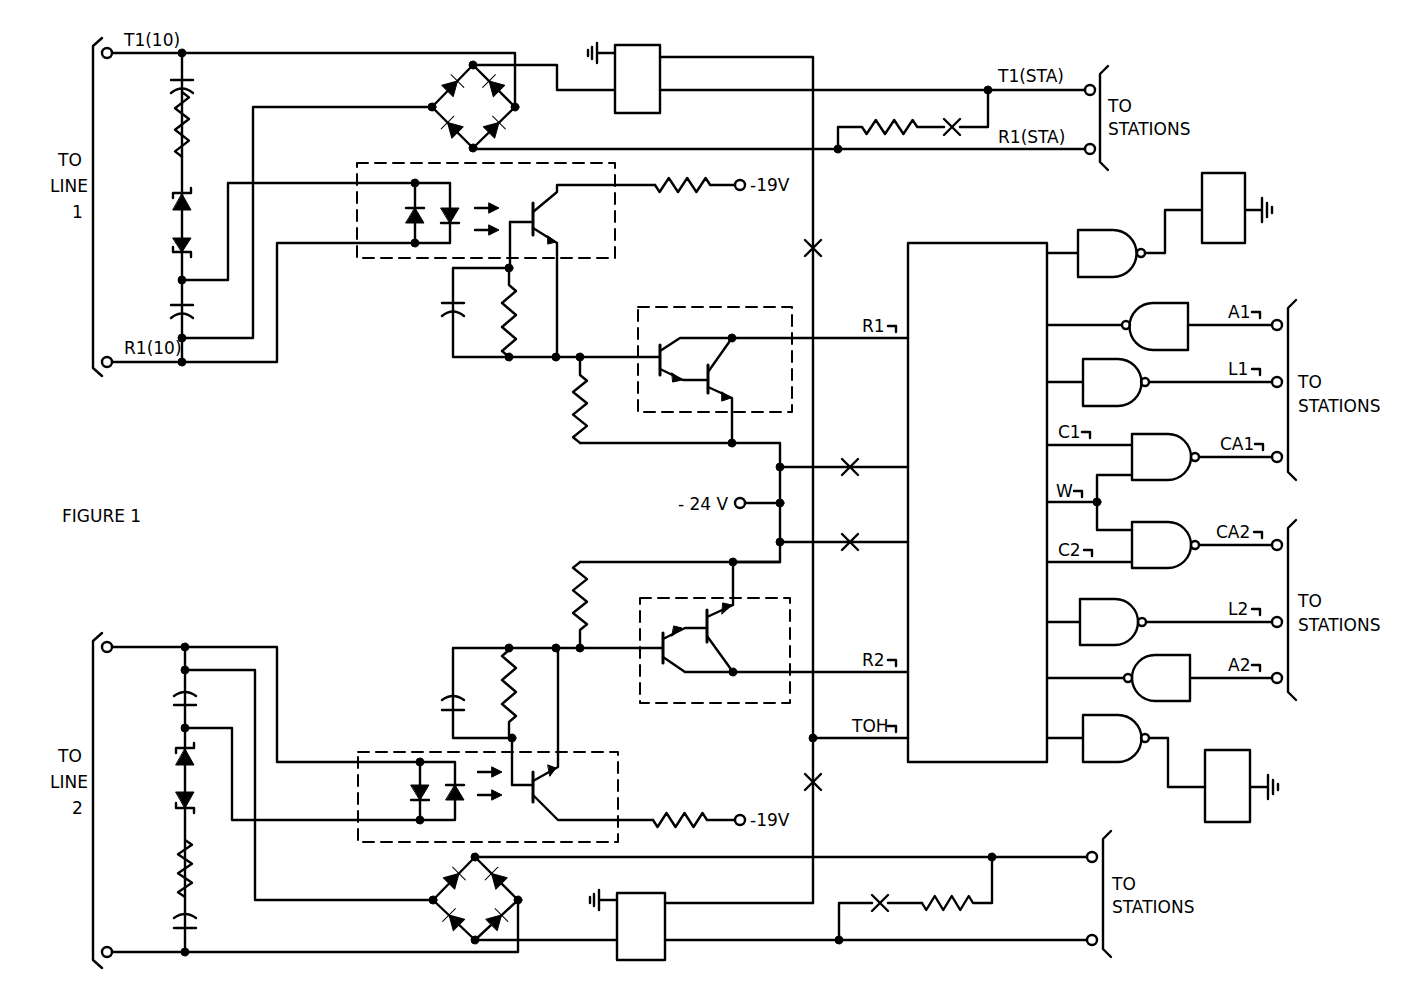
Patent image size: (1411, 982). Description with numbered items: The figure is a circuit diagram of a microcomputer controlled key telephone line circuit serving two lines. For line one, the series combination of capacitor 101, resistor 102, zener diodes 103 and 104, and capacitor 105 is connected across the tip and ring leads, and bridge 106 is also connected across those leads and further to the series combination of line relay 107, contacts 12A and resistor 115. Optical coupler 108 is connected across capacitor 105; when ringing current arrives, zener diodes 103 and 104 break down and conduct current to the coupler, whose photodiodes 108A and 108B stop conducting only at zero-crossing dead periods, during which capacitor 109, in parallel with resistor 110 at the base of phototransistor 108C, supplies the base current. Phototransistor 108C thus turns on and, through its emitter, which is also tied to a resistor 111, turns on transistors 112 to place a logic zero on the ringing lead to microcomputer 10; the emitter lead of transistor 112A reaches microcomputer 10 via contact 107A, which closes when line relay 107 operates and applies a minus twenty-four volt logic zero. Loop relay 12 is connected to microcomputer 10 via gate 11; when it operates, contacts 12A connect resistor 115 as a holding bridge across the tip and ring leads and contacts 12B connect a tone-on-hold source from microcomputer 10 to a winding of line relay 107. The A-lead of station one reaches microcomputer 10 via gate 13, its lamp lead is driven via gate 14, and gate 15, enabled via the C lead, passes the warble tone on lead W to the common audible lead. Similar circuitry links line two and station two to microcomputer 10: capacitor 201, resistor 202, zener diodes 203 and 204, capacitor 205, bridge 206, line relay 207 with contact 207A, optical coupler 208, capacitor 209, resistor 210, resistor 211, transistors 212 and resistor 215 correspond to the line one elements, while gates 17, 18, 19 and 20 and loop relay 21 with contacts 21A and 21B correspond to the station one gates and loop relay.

The microcomputer 10 is at (988, 514).
The gate 11 is at (1105, 230).
The loop relay 12 is at (1234, 220).
The contacts 12A is at (964, 114).
The contacts 12B is at (820, 243).
The gate 13 is at (1150, 303).
The gate 14 is at (1135, 406).
The gate 15 is at (1168, 434).
The NAND gate 17 is at (1160, 522).
The NAND gate 18 is at (1118, 599).
The NAND gate 19 is at (1150, 655).
The NAND gate 20 is at (1105, 762).
The output circuit 21 is at (1238, 797).
The crosspoint 21A is at (884, 891).
The crosspoint 21B is at (820, 786).
The capacitor 101 is at (197, 80).
The resistor 102 is at (200, 141).
The zener diode 103 is at (172, 194).
The zener diode 104 is at (170, 251).
The capacitor 105 is at (196, 318).
The bridge 106 is at (491, 117).
The line relay 107 is at (654, 85).
The line relay contacts 107A is at (882, 450).
The optical coupler 108 is at (615, 243).
The photodiode 108A is at (415, 202).
The photodiode 108B is at (450, 206).
The phototransistor 108C is at (546, 212).
The capacitor 109 is at (446, 300).
The resistor 110 is at (500, 313).
The resistor 111 is at (572, 388).
The transistors 112 is at (688, 307).
The transistor 112A is at (722, 366).
The resistor 115 is at (888, 116).
The capacitor 201 is at (210, 910).
The resistor 202 is at (196, 848).
The zener diode 203 is at (176, 802).
The zener diode 204 is at (180, 748).
The capacitor 205 is at (210, 688).
The diode bridge 206 is at (493, 910).
The relay circuit 207 is at (658, 927).
The crosspoint 207A is at (882, 527).
The optical coupler 208 is at (618, 782).
The capacitor 209 is at (446, 690).
The resistor 210 is at (500, 688).
The resistor 211 is at (572, 615).
The Darlington transistor pair 212 is at (700, 703).
The resistor 215 is at (960, 891).